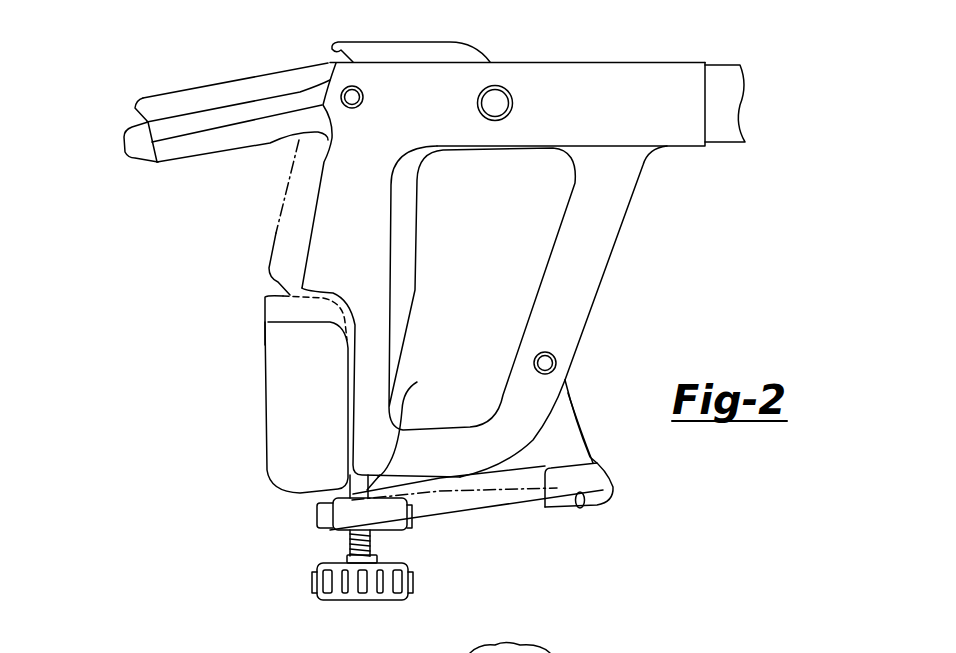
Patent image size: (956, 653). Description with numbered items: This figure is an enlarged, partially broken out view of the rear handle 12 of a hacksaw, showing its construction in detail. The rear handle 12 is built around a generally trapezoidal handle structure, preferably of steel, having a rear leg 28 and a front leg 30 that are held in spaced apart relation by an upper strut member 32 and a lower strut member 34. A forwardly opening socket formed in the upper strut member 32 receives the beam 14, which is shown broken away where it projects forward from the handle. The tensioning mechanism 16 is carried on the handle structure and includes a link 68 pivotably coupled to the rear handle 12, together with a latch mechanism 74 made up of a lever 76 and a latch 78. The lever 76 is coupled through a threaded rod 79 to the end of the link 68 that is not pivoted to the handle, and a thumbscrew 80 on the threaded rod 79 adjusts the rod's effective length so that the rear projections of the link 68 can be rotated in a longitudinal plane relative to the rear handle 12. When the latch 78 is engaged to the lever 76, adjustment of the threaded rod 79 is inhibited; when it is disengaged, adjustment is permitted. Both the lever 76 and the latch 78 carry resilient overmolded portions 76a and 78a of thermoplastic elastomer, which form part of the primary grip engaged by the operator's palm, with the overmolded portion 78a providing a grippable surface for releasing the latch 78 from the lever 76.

The rear handle 12 is at (165, 233).
The beam 14 is at (735, 80).
The tensioning mechanism 16 is at (295, 527).
The rear leg 28 is at (373, 237).
The front leg 30 is at (593, 280).
The upper strut member 32 is at (568, 67).
The lower strut member 34 is at (483, 466).
The link 68 is at (510, 500).
The latch mechanism 74 is at (252, 297).
The lever 76 is at (187, 122).
The overmolded portion 76a is at (275, 85).
The latch 78 is at (275, 433).
The overmolded portion 78a is at (269, 383).
The threaded rod 79 is at (417, 382).
The thumbscrew 80 is at (357, 600).